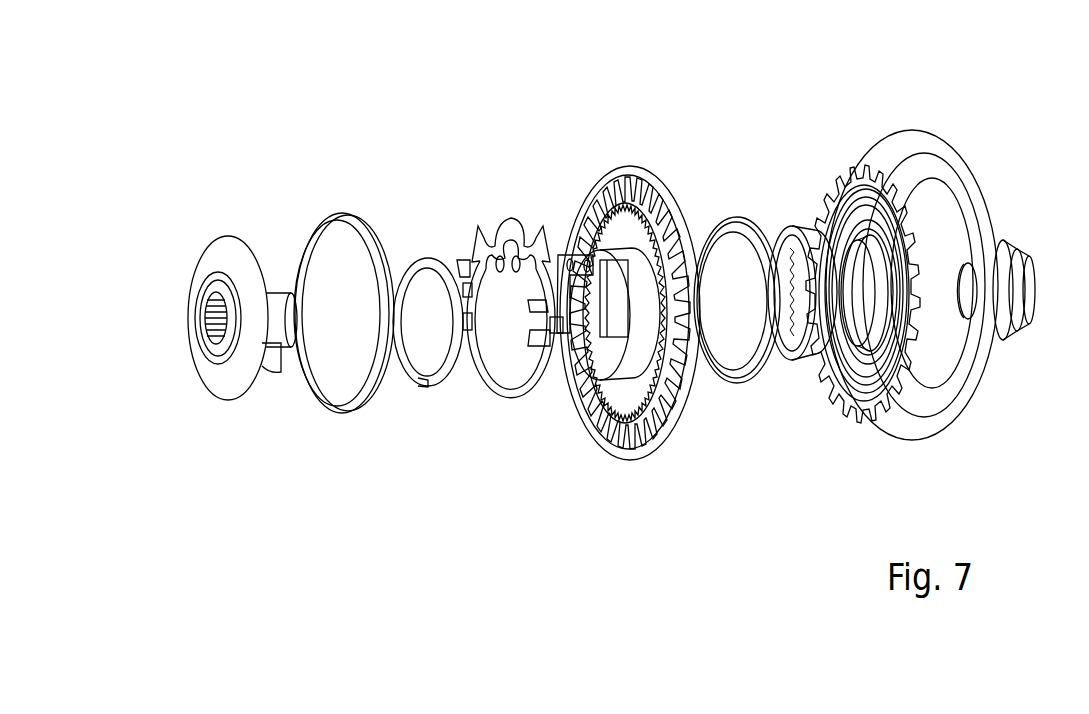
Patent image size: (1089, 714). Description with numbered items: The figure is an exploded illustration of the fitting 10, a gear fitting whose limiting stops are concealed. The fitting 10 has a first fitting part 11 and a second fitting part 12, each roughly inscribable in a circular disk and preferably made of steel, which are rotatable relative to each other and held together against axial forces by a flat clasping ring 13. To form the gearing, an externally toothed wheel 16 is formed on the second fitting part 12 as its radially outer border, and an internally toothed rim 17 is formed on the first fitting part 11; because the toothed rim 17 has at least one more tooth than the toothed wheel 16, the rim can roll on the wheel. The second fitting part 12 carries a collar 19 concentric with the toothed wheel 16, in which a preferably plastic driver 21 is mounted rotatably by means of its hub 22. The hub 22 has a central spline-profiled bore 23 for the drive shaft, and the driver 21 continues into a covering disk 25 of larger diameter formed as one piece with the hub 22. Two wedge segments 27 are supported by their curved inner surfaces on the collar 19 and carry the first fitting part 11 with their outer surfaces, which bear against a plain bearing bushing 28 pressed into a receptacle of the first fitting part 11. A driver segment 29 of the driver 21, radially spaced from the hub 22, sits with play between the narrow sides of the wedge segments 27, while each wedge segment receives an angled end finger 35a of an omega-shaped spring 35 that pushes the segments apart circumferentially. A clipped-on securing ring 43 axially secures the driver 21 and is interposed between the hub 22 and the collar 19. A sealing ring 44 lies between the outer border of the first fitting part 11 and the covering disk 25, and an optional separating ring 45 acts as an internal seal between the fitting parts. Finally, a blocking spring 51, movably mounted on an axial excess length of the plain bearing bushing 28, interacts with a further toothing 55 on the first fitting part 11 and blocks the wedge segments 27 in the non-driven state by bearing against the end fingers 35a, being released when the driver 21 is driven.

The fitting 10 is at (432, 135).
The first fitting part 11 is at (616, 324).
The second fitting part 12 is at (858, 430).
The clasping ring 13 is at (943, 326).
The externally toothed wheel 16 is at (817, 183).
The internally toothed rim 17 is at (610, 168).
The collar 19 is at (832, 398).
The driver 21 is at (208, 327).
The hub 22 is at (286, 293).
The bore 23 is at (205, 326).
The covering disk 25 is at (232, 240).
The wedge segments 27 is at (560, 345).
The plain bearing bushing 28 is at (794, 358).
The driver segment 29 is at (270, 380).
The omega-shaped spring 35 is at (445, 319).
The end finger 35a is at (463, 258).
The securing ring 43 is at (1008, 340).
The sealing ring 44 is at (348, 414).
The separating ring 45 is at (724, 384).
The blocking spring 51 is at (508, 397).
The toothing 55 is at (592, 208).